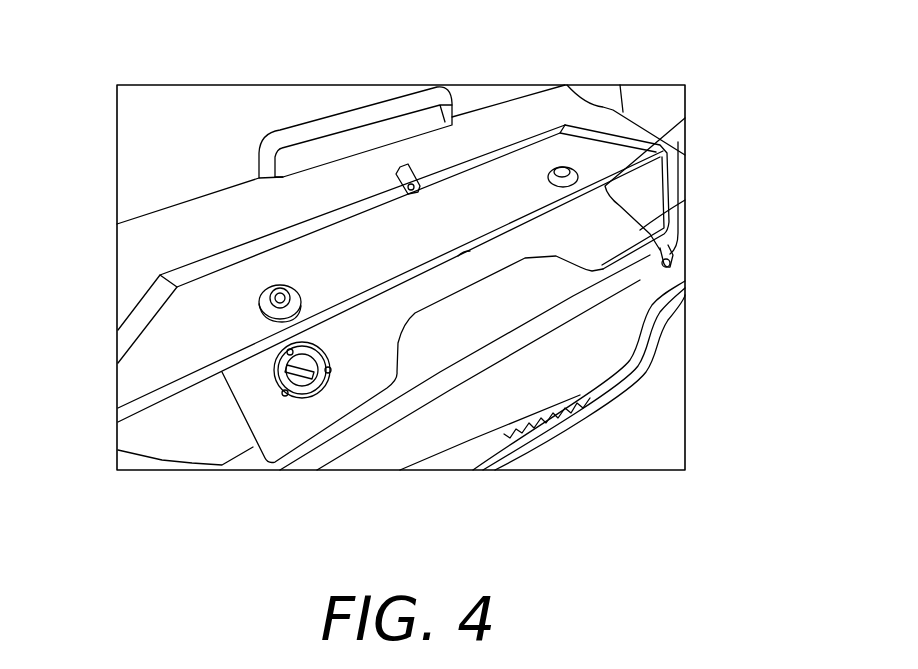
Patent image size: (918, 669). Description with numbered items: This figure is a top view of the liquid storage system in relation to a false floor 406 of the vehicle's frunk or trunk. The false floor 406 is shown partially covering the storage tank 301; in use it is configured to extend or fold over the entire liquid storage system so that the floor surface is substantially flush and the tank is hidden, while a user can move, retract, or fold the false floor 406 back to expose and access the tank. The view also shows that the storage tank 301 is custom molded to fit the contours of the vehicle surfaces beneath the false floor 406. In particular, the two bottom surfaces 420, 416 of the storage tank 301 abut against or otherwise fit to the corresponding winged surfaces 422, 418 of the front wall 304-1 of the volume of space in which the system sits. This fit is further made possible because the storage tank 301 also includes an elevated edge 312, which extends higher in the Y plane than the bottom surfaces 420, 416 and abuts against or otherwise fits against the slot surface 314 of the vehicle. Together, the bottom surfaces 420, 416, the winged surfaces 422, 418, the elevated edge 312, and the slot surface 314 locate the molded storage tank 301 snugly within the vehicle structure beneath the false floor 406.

The seat frame rail 304-1 is at (197, 133).
The false floor 406 is at (613, 125).
The storage tank 301 is at (598, 222).
The bottom surface 416 is at (672, 265).
The winged surface 418 is at (600, 277).
The elevated edge 312 is at (468, 278).
The slot surface 314 is at (473, 298).
The bottom surface 420 is at (345, 418).
The winged surface 422 is at (347, 418).